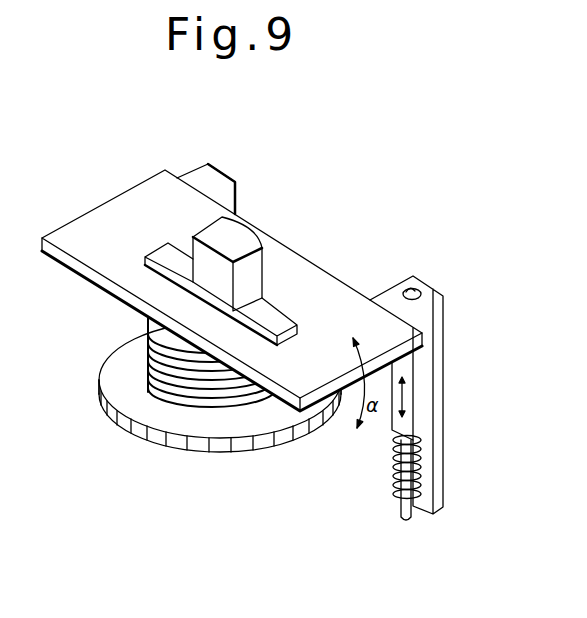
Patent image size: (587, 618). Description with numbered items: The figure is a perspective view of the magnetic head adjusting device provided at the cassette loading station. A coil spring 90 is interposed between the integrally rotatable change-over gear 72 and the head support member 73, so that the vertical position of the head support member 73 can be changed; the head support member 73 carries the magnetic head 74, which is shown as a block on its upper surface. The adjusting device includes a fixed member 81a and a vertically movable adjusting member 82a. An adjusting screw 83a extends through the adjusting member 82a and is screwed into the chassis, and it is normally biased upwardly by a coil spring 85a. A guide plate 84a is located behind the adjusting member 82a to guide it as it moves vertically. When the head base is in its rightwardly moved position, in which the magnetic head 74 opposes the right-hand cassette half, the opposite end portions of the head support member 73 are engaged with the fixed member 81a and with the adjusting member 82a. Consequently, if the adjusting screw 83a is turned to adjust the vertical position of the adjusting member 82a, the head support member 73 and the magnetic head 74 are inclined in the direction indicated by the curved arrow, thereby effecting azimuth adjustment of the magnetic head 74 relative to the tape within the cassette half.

The change-over gear 72 is at (152, 407).
The head support member 73 is at (90, 245).
The magnetic head 74 is at (243, 240).
The fixed member 81a is at (220, 178).
The adjusting member 82a is at (426, 385).
The adjusting screw 83a is at (418, 517).
The guide plate 84a is at (445, 433).
The coil spring 85a is at (396, 467).
The coil spring 90 is at (203, 390).